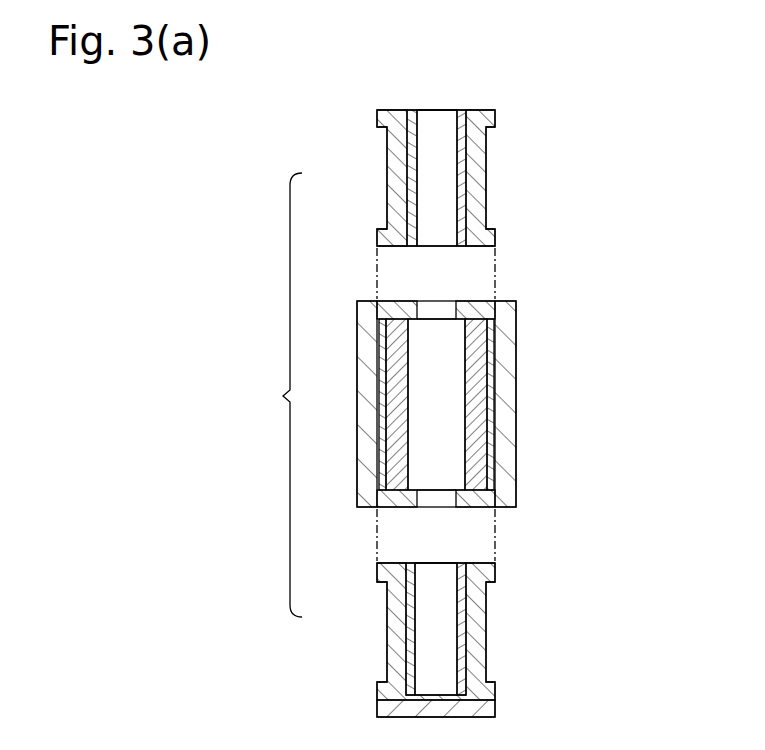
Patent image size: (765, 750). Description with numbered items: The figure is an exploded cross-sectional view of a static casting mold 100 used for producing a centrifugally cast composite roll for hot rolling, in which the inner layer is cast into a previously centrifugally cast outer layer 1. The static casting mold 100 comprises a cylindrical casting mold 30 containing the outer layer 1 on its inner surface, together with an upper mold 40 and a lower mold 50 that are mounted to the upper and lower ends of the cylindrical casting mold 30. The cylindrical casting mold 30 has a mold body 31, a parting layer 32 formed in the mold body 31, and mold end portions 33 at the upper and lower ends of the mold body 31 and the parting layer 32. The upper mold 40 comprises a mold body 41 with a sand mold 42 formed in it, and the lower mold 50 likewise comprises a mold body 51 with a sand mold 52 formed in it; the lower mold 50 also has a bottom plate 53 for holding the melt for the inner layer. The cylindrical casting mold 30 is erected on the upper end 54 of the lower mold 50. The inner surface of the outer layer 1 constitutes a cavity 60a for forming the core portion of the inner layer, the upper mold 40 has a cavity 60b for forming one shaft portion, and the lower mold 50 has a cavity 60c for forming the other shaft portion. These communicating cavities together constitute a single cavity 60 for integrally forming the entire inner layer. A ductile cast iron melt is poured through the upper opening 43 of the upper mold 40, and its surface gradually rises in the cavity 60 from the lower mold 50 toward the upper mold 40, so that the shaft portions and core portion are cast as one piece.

The static casting mold 100 is at (628, 318).
The upper mold 40 is at (455, 158).
The mold body 41 is at (480, 148).
The sand mold 42 is at (460, 200).
The upper opening 43 is at (437, 110).
The cylindrical casting mold 30 is at (459, 404).
The mold body 31 is at (508, 409).
The parting layer 32 is at (487, 347).
The mold end portions 33 is at (477, 309).
The outer layer 1 is at (477, 448).
The lower mold 50 is at (455, 620).
The mold body 51 is at (475, 604).
The sand mold 52 is at (463, 658).
The bottom plate 53 is at (483, 707).
The upper end 54 is at (445, 562).
The cavity 60 is at (279, 395).
The cavity 60a is at (428, 409).
The cavity 60b is at (433, 170).
The cavity 60c is at (432, 614).